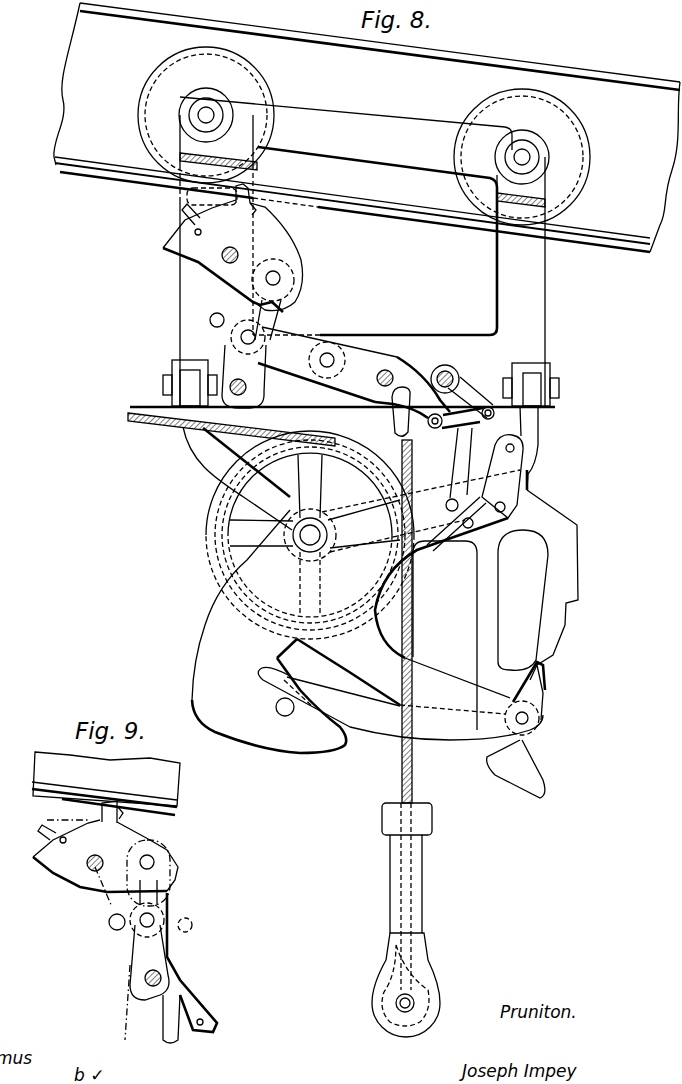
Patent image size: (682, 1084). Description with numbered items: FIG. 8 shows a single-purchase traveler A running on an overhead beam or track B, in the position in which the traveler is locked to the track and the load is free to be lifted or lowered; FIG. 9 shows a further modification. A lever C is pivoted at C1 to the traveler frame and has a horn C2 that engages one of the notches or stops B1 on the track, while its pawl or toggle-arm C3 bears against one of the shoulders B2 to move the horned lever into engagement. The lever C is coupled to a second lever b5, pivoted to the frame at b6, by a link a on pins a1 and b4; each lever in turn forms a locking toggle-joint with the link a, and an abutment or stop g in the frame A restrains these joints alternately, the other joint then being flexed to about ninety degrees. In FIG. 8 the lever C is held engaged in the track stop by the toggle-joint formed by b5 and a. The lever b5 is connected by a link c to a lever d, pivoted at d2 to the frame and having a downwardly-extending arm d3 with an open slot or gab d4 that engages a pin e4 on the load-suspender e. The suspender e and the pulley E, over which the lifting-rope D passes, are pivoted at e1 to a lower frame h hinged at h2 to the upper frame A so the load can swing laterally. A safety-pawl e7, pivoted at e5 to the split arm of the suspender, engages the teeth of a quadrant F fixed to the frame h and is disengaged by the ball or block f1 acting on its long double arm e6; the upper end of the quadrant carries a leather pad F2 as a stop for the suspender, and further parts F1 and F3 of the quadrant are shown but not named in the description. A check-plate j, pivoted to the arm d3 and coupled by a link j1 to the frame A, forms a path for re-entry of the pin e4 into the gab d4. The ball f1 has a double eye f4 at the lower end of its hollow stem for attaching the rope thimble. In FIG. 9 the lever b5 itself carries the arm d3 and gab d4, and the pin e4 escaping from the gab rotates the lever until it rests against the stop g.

In FIG. 8, the overhead beam or track B is at (367, 127).
In FIG. 8, the traveler A is at (360, 227).
In FIG. 8, the notches or stops B1 is at (250, 200).
In FIG. 9, the notches or stops B1 is at (120, 812).
In FIG. 8, the shoulders B2 is at (186, 196).
In FIG. 8, the lever C is at (233, 256).
In FIG. 9, the lever C is at (105, 863).
In FIG. 8, the pivot C1 is at (224, 262).
In FIG. 9, the pivot C1 is at (92, 873).
In FIG. 8, the projection or horn C2 is at (253, 208).
In FIG. 9, the projection or horn C2 is at (109, 810).
In FIG. 8, the pawl or toggle-arm C3 is at (185, 213).
In FIG. 9, the pawl or toggle-arm C3 is at (42, 833).
In FIG. 8, the link a is at (248, 308).
In FIG. 9, the link a is at (168, 896).
In FIG. 8, the pin a1 is at (281, 278).
In FIG. 8, the abutment or stop g is at (210, 320).
In FIG. 9, the abutment or stop g is at (109, 922).
In FIG. 8, the pin b4 is at (241, 338).
In FIG. 8, the second lever b5 is at (244, 376).
In FIG. 9, the second lever b5 is at (147, 982).
In FIG. 8, the pivot b6 is at (247, 388).
In FIG. 8, the link c is at (327, 364).
In FIG. 8, the lever d is at (379, 380).
In FIG. 8, the pivot d2 is at (392, 374).
In FIG. 8, the downwardly-extending arm d3 is at (430, 427).
In FIG. 9, the downwardly-extending arm d3 is at (190, 1000).
In FIG. 8, the open slot or gab d4 is at (394, 412).
In FIG. 9, the open slot or gab d4 is at (188, 1036).
In FIG. 8, the check-plate j is at (468, 437).
In FIG. 8, the link j1 is at (466, 388).
In FIG. 8, the lower frame h is at (218, 464).
In FIG. 8, the hinge h2 is at (182, 386).
In FIG. 8, the lifting-rope D is at (143, 420).
In FIG. 8, the pulley E is at (216, 568).
In FIG. 8, the load-suspender e is at (356, 611).
In FIG. 8, the pivot e1 is at (320, 535).
In FIG. 8, the pin or stud e4 is at (451, 500).
In FIG. 8, the pivot e5 is at (530, 718).
In FIG. 8, the long double arm e6 is at (403, 689).
In FIG. 8, the safety-pawl e7 is at (540, 672).
In FIG. 8, the quadrant F is at (578, 590).
In FIG. 8, the hanger pivot F1 is at (515, 448).
In FIG. 8, the leather pad F2 is at (472, 511).
In FIG. 8, the hanger foot F3 is at (535, 792).
In FIG. 8, the ball or block f1 is at (432, 816).
In FIG. 8, the double eye f4 is at (440, 1003).